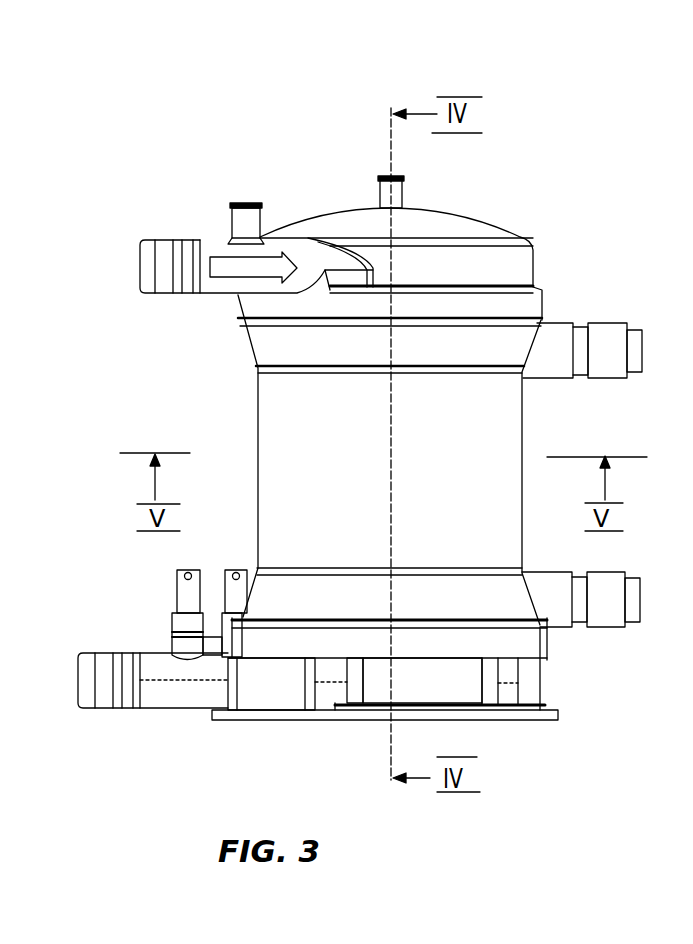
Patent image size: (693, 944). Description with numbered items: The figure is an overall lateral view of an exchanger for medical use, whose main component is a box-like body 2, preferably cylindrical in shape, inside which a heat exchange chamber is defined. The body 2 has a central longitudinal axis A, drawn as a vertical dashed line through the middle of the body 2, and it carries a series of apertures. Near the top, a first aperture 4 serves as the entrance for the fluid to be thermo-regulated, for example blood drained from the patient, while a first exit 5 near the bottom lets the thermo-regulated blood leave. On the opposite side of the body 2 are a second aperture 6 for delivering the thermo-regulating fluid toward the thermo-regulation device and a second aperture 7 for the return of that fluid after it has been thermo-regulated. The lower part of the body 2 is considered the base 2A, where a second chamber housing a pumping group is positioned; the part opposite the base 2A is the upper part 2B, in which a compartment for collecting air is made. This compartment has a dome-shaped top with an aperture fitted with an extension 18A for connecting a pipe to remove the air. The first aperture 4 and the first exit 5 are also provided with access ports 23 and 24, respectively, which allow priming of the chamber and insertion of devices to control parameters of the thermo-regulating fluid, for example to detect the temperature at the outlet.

The box-like body 2 is at (257, 410).
The base 2A is at (574, 680).
The upper part 2B is at (527, 222).
The first aperture 4 is at (125, 253).
The first exit 5 is at (75, 693).
The second aperture 6 is at (645, 340).
The second aperture 7 is at (640, 602).
The extension 18A is at (406, 187).
The access port 23 is at (248, 225).
The access port 24 is at (178, 645).
The central longitudinal axis A is at (392, 482).